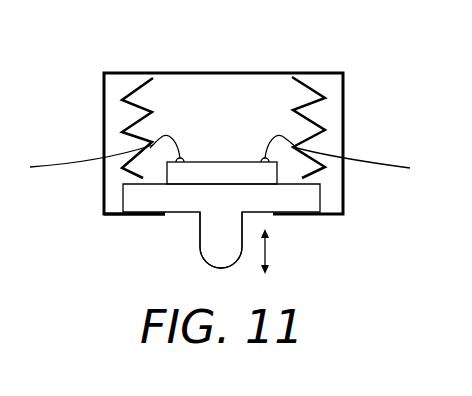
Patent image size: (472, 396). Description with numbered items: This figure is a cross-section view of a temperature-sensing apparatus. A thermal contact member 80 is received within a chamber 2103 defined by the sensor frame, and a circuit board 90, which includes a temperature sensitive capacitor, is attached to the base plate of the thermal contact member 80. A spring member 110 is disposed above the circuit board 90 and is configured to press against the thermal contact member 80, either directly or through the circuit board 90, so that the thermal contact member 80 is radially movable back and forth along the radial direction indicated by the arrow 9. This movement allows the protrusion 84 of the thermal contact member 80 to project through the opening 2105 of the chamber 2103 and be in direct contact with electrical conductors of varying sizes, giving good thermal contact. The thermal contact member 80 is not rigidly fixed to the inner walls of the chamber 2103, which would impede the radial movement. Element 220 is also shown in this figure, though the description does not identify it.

The arrow 9 is at (269, 250).
The thermal contact member 80 is at (302, 198).
The protrusion 84 is at (200, 242).
The circuit board 90 is at (227, 162).
The spring member 110 is at (112, 108).
The light path 220 is at (370, 162).
The chamber 2103 is at (344, 90).
The opening 2105 is at (185, 222).